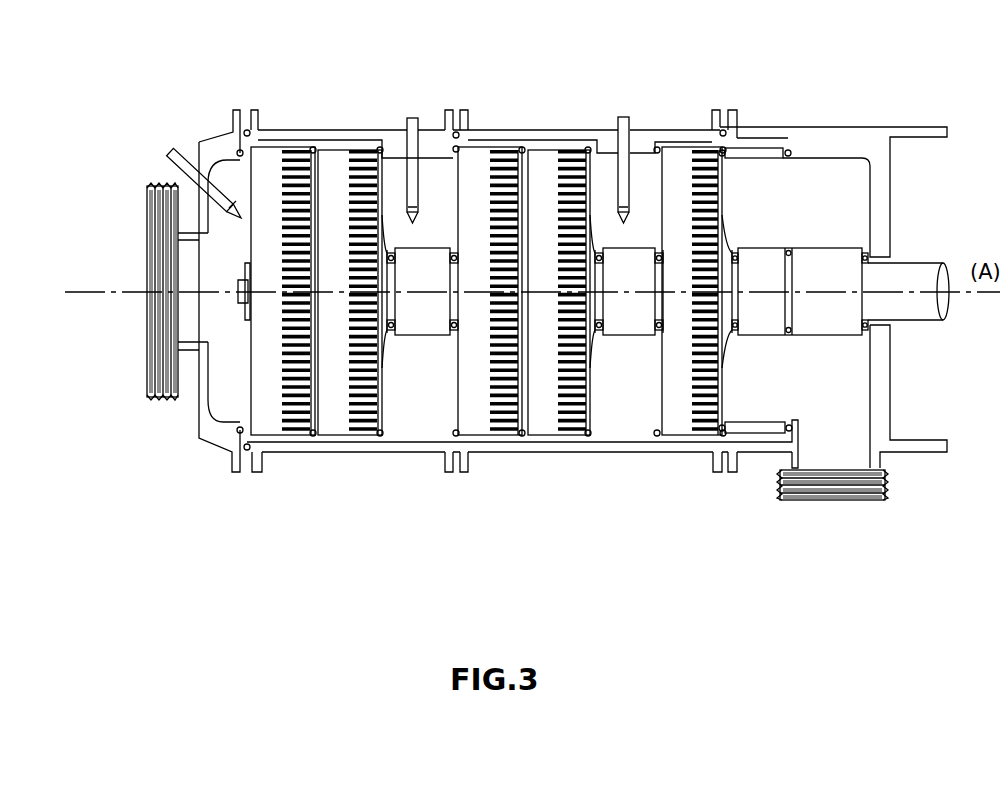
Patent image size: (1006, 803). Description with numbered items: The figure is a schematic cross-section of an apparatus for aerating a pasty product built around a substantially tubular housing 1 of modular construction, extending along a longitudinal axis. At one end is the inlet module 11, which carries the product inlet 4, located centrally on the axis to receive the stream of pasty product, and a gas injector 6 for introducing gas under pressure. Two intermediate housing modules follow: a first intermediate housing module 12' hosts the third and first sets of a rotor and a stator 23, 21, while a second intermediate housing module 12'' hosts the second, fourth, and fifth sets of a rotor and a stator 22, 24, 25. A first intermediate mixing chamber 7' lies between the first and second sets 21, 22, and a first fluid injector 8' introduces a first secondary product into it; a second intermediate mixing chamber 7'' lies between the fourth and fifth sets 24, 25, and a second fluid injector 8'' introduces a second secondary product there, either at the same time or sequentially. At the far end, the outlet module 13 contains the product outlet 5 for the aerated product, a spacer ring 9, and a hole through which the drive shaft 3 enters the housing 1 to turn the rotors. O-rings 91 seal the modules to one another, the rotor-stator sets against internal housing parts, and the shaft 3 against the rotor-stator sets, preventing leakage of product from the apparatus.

The housing 1 is at (845, 127).
The drive shaft 3 is at (917, 265).
The product inlet 4 is at (147, 318).
The product outlet 5 is at (868, 495).
The gas injector 6 is at (168, 150).
The first intermediate mixing chamber 7' is at (422, 380).
The second intermediate mixing chamber 7'' is at (629, 380).
The first fluid injector 8' is at (417, 140).
The second fluid injector 8'' is at (630, 140).
The spacer ring 9 is at (745, 430).
The inlet module 11 is at (220, 143).
The first intermediate housing module 12' is at (351, 309).
The second intermediate housing module 12'' is at (625, 309).
The outlet module 13 is at (878, 387).
The first set of a rotor and a stator 21 is at (330, 155).
The second set of a rotor and a stator 22 is at (483, 152).
The third set of a rotor and a stator 23 is at (271, 150).
The fourth set of a rotor and a stator 24 is at (543, 152).
The fifth set of a rotor and a stator 25 is at (675, 152).
The O-rings 91 is at (732, 128).